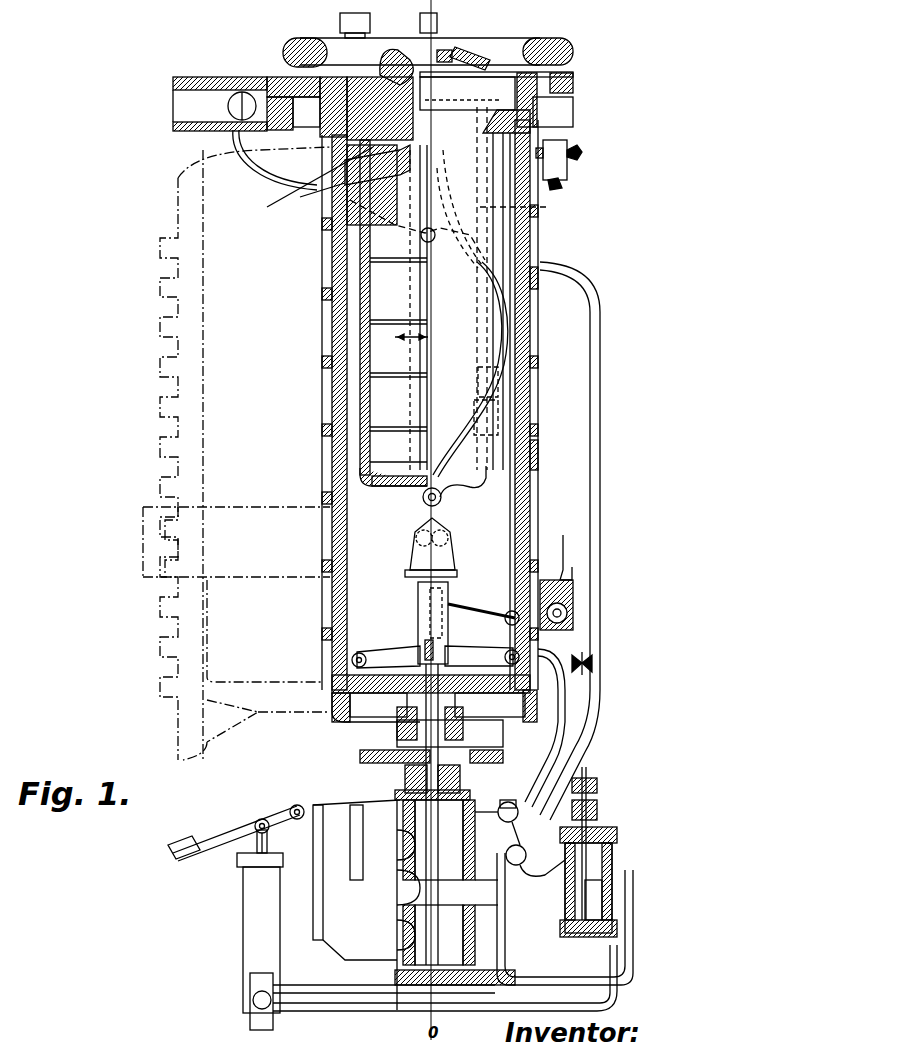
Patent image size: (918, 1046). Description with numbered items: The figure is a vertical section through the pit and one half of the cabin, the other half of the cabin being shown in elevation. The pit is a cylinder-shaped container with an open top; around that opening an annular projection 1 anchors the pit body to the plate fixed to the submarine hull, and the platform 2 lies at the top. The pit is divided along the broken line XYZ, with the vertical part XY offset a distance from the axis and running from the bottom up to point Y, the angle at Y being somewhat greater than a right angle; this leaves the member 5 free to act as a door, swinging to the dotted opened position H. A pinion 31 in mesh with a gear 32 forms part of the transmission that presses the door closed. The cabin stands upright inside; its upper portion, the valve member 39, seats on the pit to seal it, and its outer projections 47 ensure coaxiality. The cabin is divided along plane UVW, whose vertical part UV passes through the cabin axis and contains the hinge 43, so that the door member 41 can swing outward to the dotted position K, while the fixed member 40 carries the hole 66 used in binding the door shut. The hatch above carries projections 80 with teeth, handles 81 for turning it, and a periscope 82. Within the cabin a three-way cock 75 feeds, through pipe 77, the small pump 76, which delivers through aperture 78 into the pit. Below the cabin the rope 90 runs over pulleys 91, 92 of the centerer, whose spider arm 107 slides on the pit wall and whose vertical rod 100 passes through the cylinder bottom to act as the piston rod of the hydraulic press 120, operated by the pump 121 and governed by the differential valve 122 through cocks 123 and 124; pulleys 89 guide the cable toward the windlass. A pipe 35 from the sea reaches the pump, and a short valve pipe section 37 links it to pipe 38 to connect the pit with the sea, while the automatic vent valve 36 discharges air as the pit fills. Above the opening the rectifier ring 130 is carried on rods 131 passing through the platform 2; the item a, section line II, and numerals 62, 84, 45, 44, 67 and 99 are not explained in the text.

The annular projection 1 is at (275, 80).
The platform 2 is at (235, 125).
The pit door member 5 is at (330, 110).
The rectifier ring 130 is at (545, 33).
The rods 131 is at (340, 20).
The handles 81 is at (388, 50).
The periscope 82 is at (438, 22).
The block 62 is at (455, 48).
The inclined bar 84 is at (497, 52).
The projections 80 is at (400, 90).
The valve member 39 is at (483, 112).
The three-way cock 75 is at (380, 176).
The outer straight projections 47 is at (362, 258).
The inner cylinder rungs 45 is at (362, 320).
The cabin door member 41 is at (360, 468).
The small pump 76 is at (500, 385).
The aperture 78 is at (495, 414).
The curved guide 44 is at (500, 318).
The hole 66 is at (372, 215).
The pipe 77 is at (525, 208).
The wall lug 67 is at (520, 242).
The automatic vent valve 36 is at (560, 165).
The pipe 35 is at (592, 346).
The cabin member 40 is at (486, 486).
The rope 90 is at (442, 502).
The hinge 43 is at (415, 512).
The flange plate 99 is at (412, 578).
The pulley 91 is at (450, 598).
The pulley 92 is at (445, 620).
The spider arm 107 is at (388, 655).
The pulleys 89 is at (565, 613).
The valve pipe section 37 is at (594, 663).
The pipe 38 is at (565, 710).
The gear 32 is at (360, 758).
The pinion 31 is at (503, 752).
The rod 100 is at (410, 790).
The hydraulic press 120 is at (400, 880).
The pump 121 is at (262, 938).
The cock 124 is at (508, 788).
The cock 123 is at (520, 870).
The differential valve 122 is at (612, 893).
The opened position of pit door H is at (205, 353).
The opened position of cabin door K is at (237, 575).
The division line point X is at (400, 700).
The division line point Z is at (411, 337).
The division line point Y is at (420, 152).
The cabin division plane point V is at (422, 175).
The cabin division plane point W is at (320, 177).
The cabin division plane point U is at (450, 467).
The lug a is at (533, 458).
The section line II is at (328, 637).